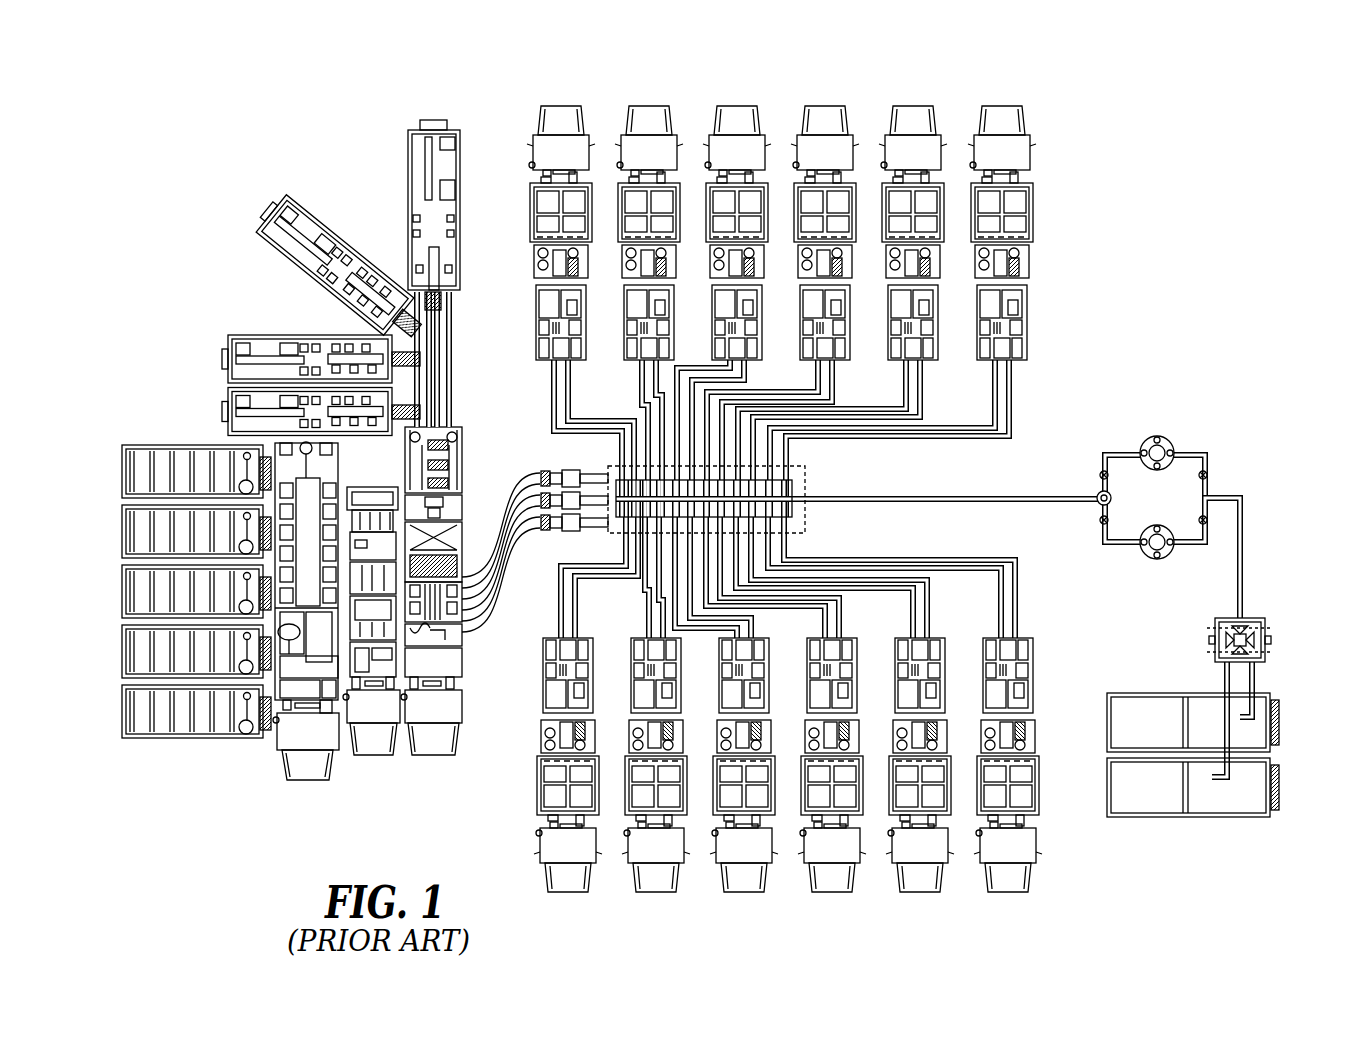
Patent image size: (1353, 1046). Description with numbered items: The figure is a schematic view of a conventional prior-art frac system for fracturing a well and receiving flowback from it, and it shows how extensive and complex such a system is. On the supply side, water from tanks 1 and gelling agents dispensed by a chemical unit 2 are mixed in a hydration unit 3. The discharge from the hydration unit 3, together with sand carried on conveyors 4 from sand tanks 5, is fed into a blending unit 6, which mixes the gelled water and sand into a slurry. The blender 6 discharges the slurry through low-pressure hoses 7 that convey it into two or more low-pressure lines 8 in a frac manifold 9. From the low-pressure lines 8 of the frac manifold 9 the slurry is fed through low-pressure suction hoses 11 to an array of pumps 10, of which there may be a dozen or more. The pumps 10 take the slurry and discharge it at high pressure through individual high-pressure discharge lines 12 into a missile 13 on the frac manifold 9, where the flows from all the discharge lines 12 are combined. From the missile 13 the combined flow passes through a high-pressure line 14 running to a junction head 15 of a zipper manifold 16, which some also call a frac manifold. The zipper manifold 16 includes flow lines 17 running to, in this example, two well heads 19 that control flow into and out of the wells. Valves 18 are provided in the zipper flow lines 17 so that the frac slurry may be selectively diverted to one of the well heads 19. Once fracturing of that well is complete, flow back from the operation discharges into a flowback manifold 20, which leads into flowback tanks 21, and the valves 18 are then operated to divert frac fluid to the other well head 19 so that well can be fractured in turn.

The tanks 1 is at (116, 437).
The chemical unit 2 is at (372, 745).
The hydration unit 3 is at (308, 775).
The conveyors 4 is at (433, 373).
The sand tanks 5 is at (436, 120).
The blending unit 6 is at (435, 745).
The low-pressure hoses 7 is at (497, 488).
The low-pressure lines 8 is at (792, 503).
The frac manifold 9 is at (605, 470).
The pumps 10 is at (528, 113).
The suction hoses 11 is at (553, 400).
The discharge lines 12 is at (575, 392).
The missile 13 is at (768, 494).
The high-pressure line 14 is at (912, 503).
The junction head 15 is at (1100, 506).
The zipper manifold 16 is at (1127, 555).
The flow lines 17 is at (1133, 455).
The valves 18 is at (1110, 520).
The well heads 19 is at (1163, 438).
The flowback manifold 20 is at (1267, 640).
The flowback tanks 21 is at (1290, 820).